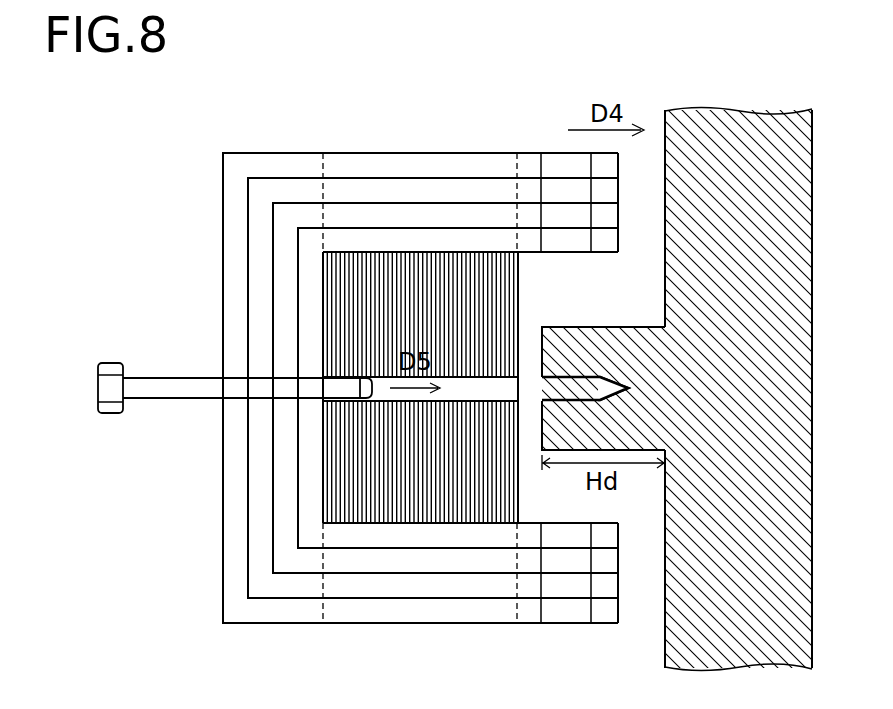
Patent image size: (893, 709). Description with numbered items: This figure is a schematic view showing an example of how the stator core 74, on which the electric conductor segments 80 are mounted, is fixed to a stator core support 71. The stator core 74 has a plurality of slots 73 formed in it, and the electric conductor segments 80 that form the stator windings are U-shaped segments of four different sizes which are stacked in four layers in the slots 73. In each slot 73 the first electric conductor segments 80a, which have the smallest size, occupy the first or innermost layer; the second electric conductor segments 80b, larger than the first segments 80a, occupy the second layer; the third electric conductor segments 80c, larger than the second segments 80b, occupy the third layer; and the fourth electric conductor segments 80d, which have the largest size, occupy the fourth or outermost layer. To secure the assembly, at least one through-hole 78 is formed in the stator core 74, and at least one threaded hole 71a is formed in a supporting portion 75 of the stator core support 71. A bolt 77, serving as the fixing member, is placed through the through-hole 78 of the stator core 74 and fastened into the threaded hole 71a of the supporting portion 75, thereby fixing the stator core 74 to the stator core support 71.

The stator core support 71 is at (736, 135).
The threaded hole 71a is at (604, 392).
The slots 73 is at (500, 250).
The stator core 74 is at (363, 318).
The supporting portion 75 is at (620, 348).
The bolt 77 is at (117, 363).
The through-hole 78 is at (493, 400).
The electric conductor segments 80 is at (487, 103).
The first electric conductor segments 80a is at (530, 233).
The second electric conductor segments 80b is at (442, 215).
The third electric conductor segments 80c is at (372, 192).
The fourth electric conductor segments 80d is at (293, 168).